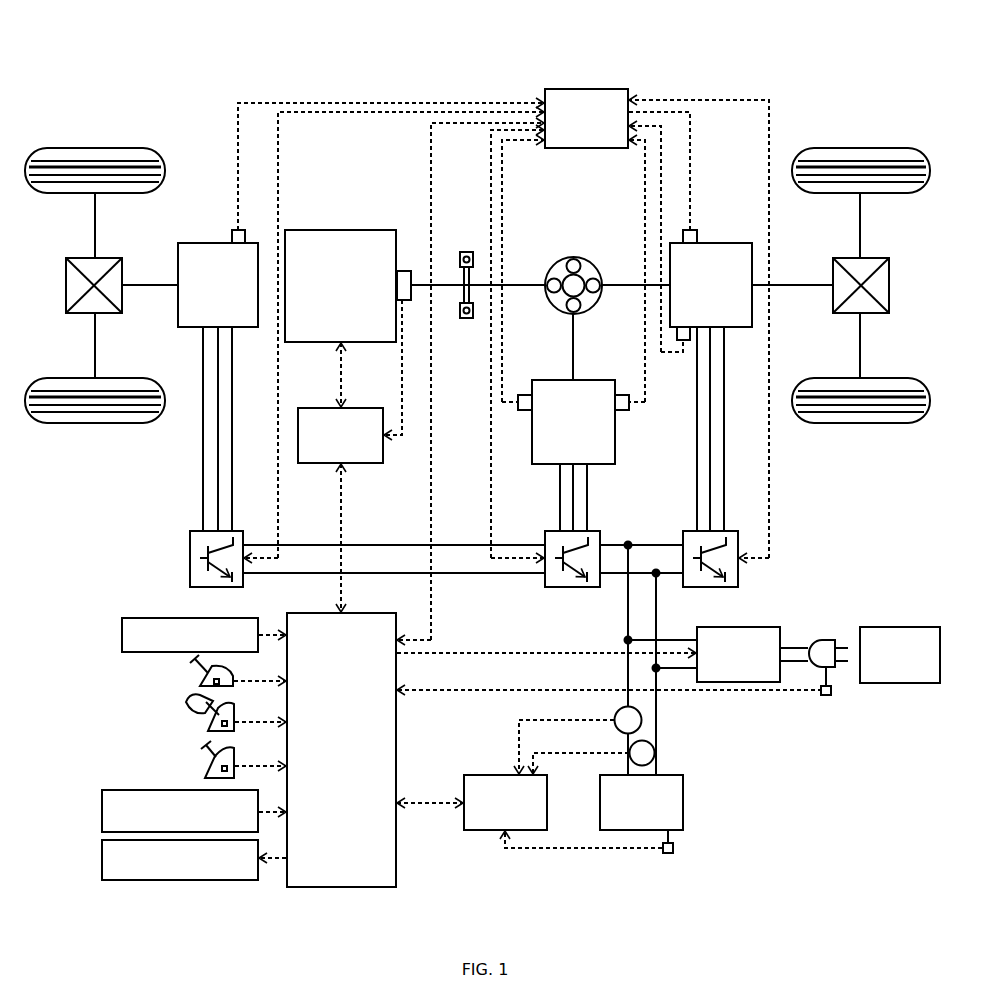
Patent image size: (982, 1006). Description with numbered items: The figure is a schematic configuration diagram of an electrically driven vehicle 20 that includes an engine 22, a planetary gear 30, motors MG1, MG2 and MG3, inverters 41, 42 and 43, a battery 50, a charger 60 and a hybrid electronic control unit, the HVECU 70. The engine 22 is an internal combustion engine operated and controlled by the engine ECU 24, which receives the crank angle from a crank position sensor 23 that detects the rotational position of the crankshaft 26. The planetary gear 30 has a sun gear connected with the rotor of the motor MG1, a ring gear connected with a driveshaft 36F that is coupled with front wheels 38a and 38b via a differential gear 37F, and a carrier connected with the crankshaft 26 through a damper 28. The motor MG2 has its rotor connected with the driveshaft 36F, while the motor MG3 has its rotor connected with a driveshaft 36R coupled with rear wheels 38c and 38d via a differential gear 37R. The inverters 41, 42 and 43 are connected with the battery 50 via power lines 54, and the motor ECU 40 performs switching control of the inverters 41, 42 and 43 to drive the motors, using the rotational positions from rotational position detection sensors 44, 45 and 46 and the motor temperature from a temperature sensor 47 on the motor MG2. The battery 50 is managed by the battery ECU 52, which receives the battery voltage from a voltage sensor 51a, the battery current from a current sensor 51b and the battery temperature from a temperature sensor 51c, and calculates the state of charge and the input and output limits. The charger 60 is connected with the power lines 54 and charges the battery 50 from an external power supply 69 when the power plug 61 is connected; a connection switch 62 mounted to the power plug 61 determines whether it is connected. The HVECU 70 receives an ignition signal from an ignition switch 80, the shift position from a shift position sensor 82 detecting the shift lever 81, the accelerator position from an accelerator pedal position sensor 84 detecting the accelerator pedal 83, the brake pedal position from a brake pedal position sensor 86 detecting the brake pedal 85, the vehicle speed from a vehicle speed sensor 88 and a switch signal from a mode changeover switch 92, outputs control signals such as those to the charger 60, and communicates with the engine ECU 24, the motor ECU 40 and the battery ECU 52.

The electrically driven vehicle 20 is at (751, 64).
The engine 22 is at (340, 229).
The crank position sensor 23 is at (402, 270).
The engine ECU 24 is at (368, 406).
The crankshaft 26 is at (445, 283).
The damper 28 is at (466, 319).
The planetary gear 30 is at (574, 257).
The rear driveshaft 36R is at (145, 284).
The front driveshaft 36F is at (800, 284).
The rear differential gear 37R is at (80, 257).
The front differential gear 37F is at (875, 257).
The front wheel 38a is at (860, 147).
The front wheel 38b is at (860, 424).
The rear wheel 38c is at (95, 147).
The rear wheel 38d is at (95, 424).
The motor ECU 40 is at (585, 88).
The inverter 41 is at (597, 530).
The inverter 42 is at (735, 530).
The inverter 43 is at (190, 541).
The rotational position detection sensor 44 is at (522, 394).
The rotational position detection sensor 45 is at (692, 229).
The rotational position detection sensor 46 is at (240, 229).
The temperature sensor 47 is at (689, 341).
The battery 50 is at (683, 801).
The voltage sensor 51a is at (655, 752).
The current sensor 51b is at (643, 720).
The temperature sensor 51c is at (668, 854).
The battery ECU 52 is at (492, 774).
The power lines 54 is at (656, 615).
The charger 60 is at (751, 635).
The power plug 61 is at (826, 640).
The connection switch 62 is at (826, 696).
The external power supply 69 is at (900, 627).
The HVECU 70 is at (397, 750).
The ignition switch 80 is at (122, 633).
The shift lever 81 is at (192, 667).
The shift position sensor 82 is at (204, 681).
The accelerator pedal 83 is at (186, 707).
The accelerator pedal position sensor 84 is at (218, 726).
The brake pedal 85 is at (203, 748).
The brake pedal position sensor 86 is at (212, 769).
The vehicle speed sensor 88 is at (102, 812).
The mode changeover switch 92 is at (102, 856).
The motor MG1 is at (598, 380).
The motor MG2 is at (722, 243).
The motor MG3 is at (178, 308).